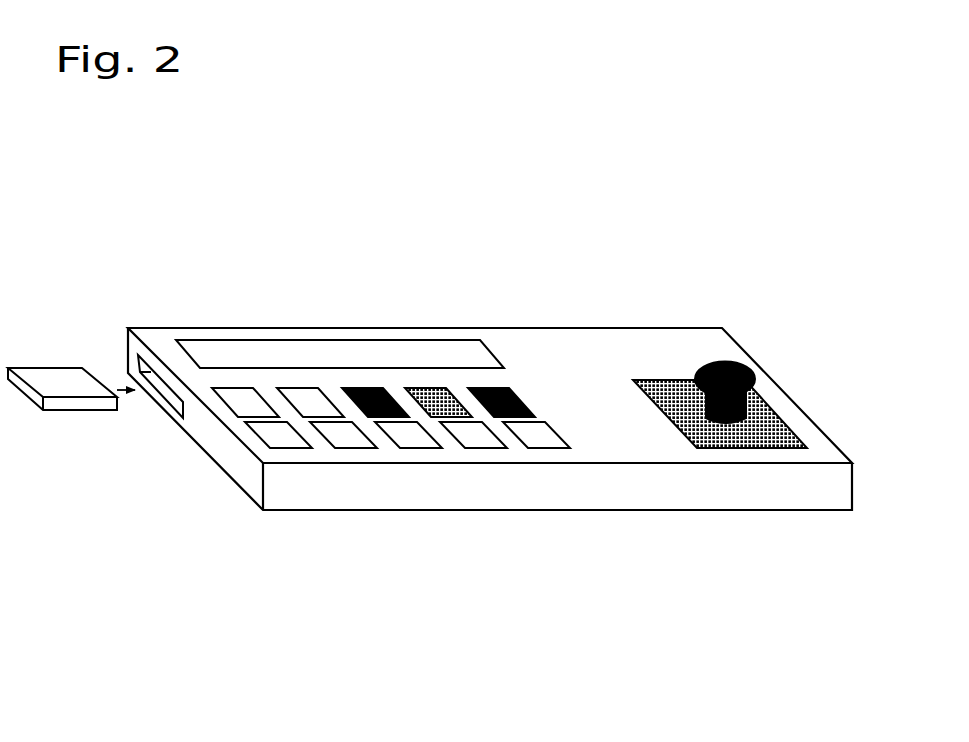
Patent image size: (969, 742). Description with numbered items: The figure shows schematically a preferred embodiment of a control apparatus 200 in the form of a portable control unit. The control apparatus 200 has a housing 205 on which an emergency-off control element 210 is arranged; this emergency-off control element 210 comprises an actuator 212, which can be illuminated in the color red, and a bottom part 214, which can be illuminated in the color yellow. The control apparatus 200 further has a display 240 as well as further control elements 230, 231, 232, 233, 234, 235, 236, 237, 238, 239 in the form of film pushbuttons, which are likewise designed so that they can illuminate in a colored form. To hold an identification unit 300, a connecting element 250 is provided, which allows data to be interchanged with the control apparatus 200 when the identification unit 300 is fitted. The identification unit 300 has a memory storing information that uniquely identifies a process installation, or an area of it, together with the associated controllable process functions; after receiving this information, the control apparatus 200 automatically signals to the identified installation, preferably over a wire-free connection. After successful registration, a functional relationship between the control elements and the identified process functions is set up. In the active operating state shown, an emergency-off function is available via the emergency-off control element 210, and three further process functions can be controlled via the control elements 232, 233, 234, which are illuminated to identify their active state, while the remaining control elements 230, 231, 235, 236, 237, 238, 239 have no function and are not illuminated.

The control apparatus 200 is at (303, 160).
The housing 205 is at (610, 328).
The emergency-off control element 210 is at (763, 365).
The actuator 212 is at (753, 377).
The bottom part 214 is at (777, 413).
The control element 230 is at (227, 390).
The control element 231 is at (293, 390).
The control element 232 is at (358, 390).
The control element 233 is at (421, 390).
The control element 234 is at (484, 390).
The control element 235 is at (282, 450).
The control element 236 is at (348, 450).
The control element 237 is at (413, 450).
The control element 238 is at (478, 450).
The control element 239 is at (543, 450).
The display 240 is at (203, 338).
The connecting element 250 is at (137, 365).
The identification unit 300 is at (86, 411).